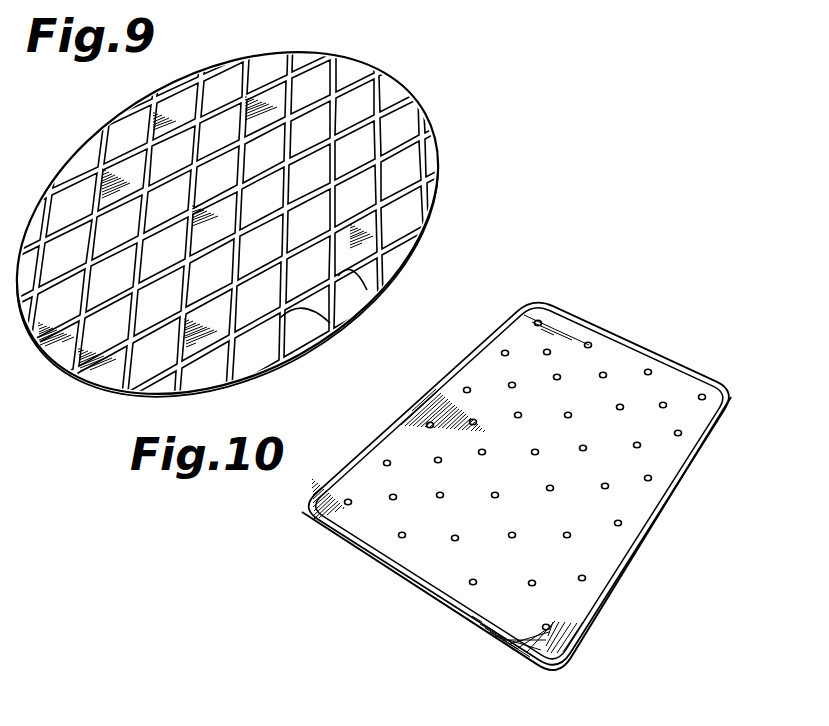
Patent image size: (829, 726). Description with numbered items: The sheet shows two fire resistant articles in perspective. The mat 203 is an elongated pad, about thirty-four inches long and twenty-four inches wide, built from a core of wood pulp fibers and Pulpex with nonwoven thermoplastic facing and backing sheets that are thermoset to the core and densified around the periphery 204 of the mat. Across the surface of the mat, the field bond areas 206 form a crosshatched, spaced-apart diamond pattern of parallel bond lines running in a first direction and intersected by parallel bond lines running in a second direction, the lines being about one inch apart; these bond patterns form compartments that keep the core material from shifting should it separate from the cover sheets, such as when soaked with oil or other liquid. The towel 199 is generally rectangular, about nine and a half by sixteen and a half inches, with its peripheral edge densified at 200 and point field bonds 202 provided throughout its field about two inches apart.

In FIG. 10, the towel 199 is at (697, 360).
In FIG. 10, the densified peripheral edge 200 is at (623, 341).
In FIG. 10, the point field bonds 202 is at (664, 404).
In FIG. 9, the mat 203 is at (427, 90).
In FIG. 9, the periphery 204 is at (425, 197).
In FIG. 9, the field bond areas 206 is at (366, 280).